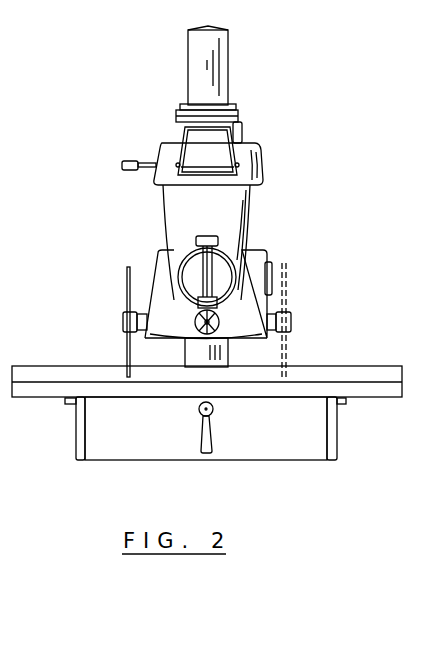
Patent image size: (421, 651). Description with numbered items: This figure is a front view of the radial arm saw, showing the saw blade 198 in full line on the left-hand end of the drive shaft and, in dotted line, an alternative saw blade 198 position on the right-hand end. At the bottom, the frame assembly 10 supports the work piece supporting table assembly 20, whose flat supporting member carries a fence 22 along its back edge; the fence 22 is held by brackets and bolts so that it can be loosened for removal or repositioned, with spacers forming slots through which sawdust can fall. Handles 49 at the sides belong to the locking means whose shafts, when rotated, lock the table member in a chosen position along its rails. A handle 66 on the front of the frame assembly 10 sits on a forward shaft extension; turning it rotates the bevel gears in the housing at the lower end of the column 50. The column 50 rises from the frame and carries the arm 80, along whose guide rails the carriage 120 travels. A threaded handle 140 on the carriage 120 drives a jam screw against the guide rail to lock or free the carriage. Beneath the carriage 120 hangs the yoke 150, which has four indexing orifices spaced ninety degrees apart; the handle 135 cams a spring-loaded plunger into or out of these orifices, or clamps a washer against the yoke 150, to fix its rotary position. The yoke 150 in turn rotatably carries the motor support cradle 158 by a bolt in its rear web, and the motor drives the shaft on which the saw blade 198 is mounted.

The frame assembly 10 is at (155, 458).
The work piece supporting table assembly 20 is at (320, 376).
The fence 22 is at (70, 365).
The handles 49 is at (76, 425).
The column 50 is at (228, 74).
The handle 66 is at (203, 432).
The arm 80 is at (194, 142).
The carriage 120 is at (259, 160).
The handle 135 is at (128, 161).
The handle 140 is at (243, 140).
The yoke 150 is at (232, 223).
The motor support cradle 158 is at (250, 300).
The saw blade 198 is at (126, 274).